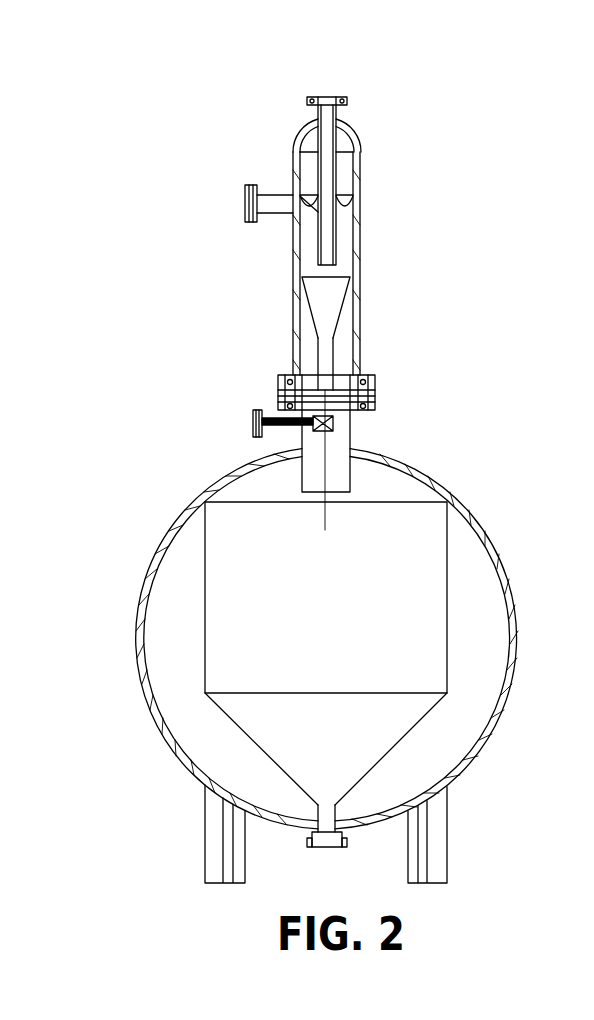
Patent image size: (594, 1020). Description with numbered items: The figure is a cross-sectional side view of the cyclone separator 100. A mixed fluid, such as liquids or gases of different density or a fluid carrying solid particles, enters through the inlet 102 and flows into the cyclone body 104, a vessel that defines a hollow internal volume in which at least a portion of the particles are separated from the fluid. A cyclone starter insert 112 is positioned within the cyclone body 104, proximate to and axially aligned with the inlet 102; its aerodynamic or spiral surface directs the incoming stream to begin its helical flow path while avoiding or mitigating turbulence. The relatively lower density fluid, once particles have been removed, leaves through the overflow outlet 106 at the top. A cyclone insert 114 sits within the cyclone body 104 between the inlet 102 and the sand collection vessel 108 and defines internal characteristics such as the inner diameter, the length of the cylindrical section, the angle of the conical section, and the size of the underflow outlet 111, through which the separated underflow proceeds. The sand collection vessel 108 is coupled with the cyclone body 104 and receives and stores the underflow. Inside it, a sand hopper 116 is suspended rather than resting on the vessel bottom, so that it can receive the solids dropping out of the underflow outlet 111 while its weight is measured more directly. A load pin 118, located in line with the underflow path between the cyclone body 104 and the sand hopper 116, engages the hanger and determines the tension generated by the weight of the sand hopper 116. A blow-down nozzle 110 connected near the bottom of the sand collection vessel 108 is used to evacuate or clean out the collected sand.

The cyclone separator 100 is at (455, 143).
The inlet 102 is at (242, 202).
The cyclone body 104 is at (358, 243).
The overflow outlet 106 is at (340, 99).
The sand collection vessel 108 is at (503, 562).
The blow-down nozzle 110 is at (336, 848).
The underflow outlet 111 is at (333, 367).
The cyclone starter insert 112 is at (345, 195).
The cyclone insert 114 is at (345, 320).
The sand hopper 116 is at (447, 660).
The load pin 118 is at (352, 432).